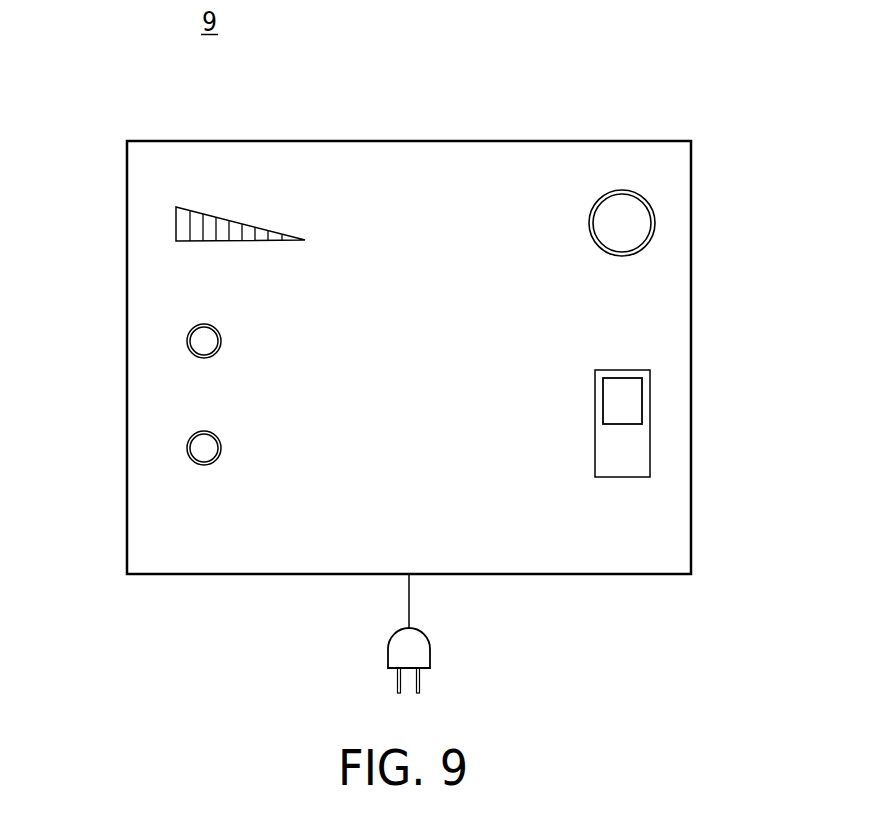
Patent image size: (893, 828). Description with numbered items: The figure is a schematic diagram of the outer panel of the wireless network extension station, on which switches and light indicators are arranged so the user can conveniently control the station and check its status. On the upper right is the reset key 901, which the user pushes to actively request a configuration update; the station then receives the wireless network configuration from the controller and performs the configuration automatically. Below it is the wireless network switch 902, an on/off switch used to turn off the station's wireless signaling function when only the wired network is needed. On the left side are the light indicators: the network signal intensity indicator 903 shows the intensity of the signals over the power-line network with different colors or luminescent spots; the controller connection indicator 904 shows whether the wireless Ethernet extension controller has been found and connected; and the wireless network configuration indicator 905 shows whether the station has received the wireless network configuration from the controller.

The reset key 901 is at (622, 202).
The wireless network switch 902 is at (645, 434).
The network signal intensity indicator 903 is at (176, 223).
The controller connection indicator 904 is at (187, 341).
The wireless network configuration indicator 905 is at (187, 448).